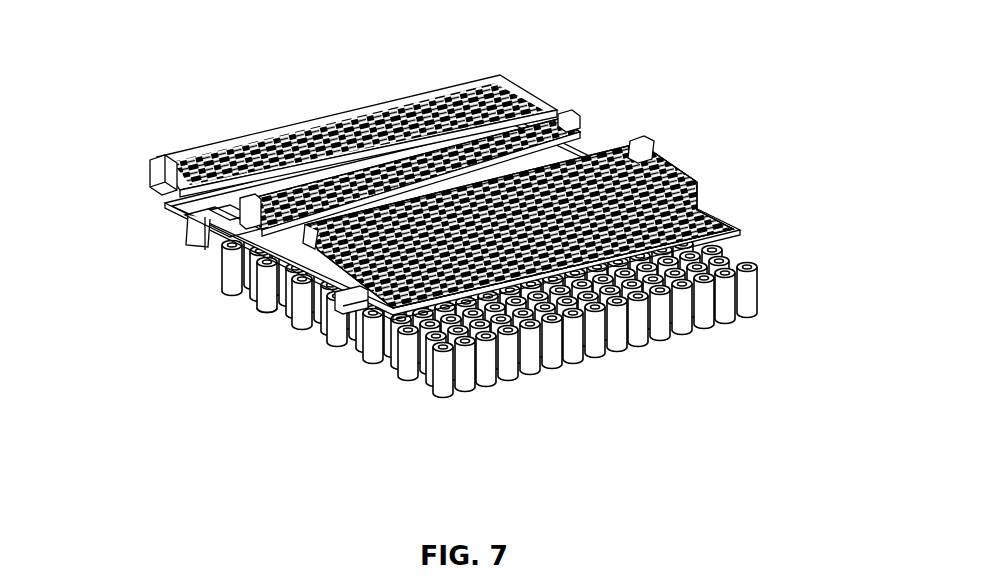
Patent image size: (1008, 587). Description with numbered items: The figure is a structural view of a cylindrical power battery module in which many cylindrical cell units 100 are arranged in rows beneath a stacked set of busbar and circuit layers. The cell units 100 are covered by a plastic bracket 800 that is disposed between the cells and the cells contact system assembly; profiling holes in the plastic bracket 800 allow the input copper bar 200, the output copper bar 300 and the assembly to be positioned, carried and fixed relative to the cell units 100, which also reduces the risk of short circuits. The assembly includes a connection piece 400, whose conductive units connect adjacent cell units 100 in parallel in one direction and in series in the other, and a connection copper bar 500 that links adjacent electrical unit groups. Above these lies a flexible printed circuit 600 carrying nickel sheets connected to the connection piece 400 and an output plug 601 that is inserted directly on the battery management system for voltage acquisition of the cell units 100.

The cell unit 100 is at (489, 284).
The input copper bar 200 is at (538, 92).
The output copper bar 300 is at (250, 320).
The connection piece 400 is at (393, 62).
The connection copper bar 500 is at (668, 162).
The flexible printed circuit 600 is at (237, 124).
The output plug 601 is at (150, 175).
The plastic bracket 800 is at (748, 230).